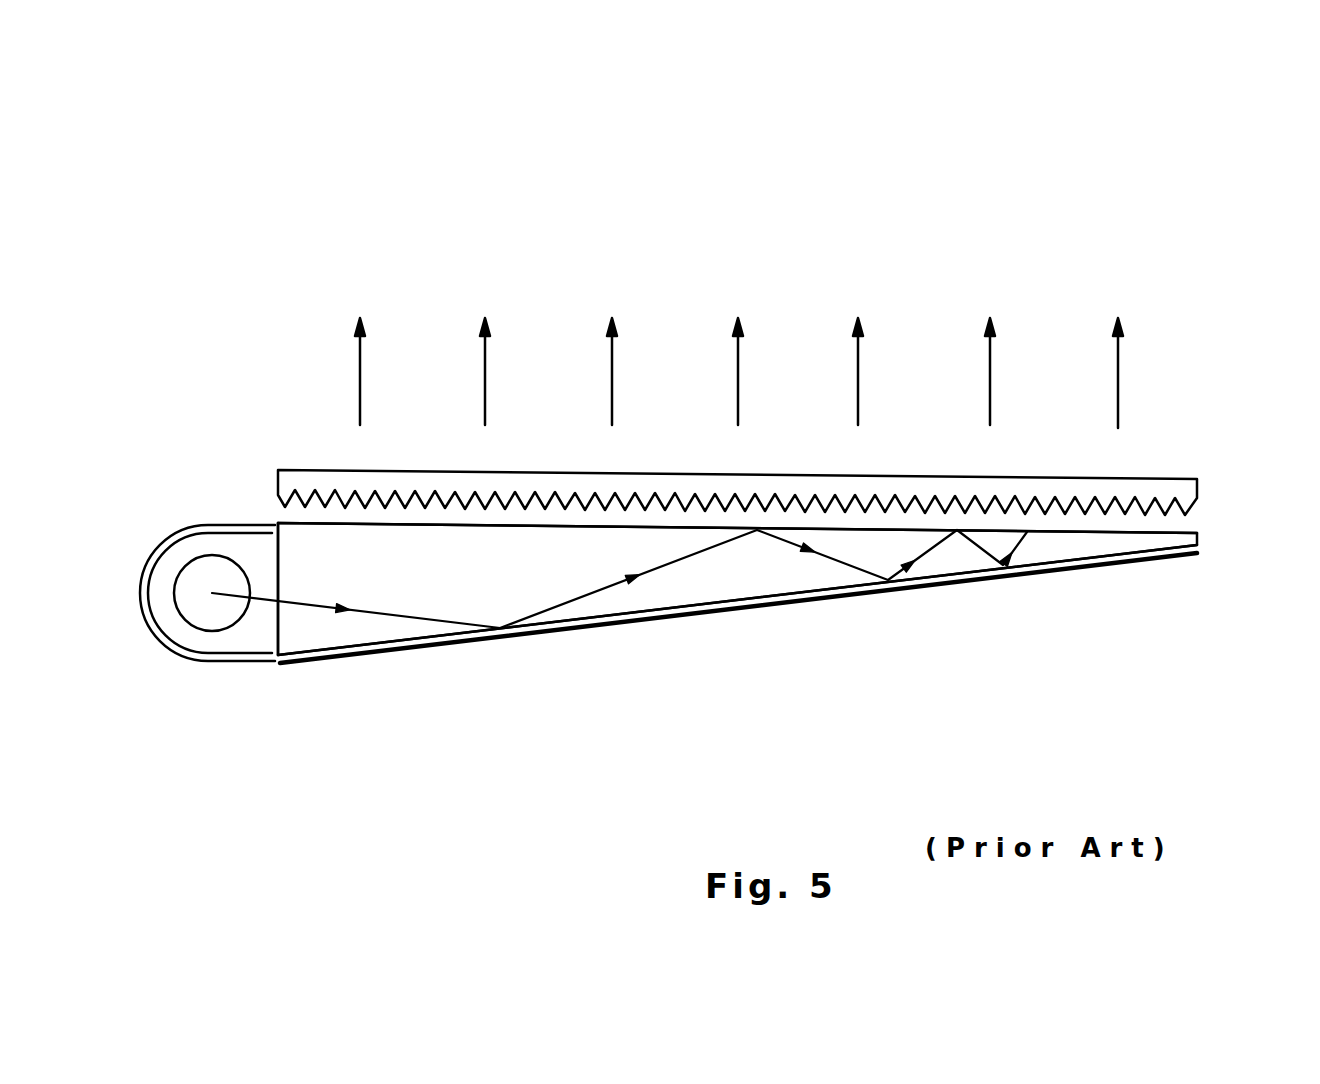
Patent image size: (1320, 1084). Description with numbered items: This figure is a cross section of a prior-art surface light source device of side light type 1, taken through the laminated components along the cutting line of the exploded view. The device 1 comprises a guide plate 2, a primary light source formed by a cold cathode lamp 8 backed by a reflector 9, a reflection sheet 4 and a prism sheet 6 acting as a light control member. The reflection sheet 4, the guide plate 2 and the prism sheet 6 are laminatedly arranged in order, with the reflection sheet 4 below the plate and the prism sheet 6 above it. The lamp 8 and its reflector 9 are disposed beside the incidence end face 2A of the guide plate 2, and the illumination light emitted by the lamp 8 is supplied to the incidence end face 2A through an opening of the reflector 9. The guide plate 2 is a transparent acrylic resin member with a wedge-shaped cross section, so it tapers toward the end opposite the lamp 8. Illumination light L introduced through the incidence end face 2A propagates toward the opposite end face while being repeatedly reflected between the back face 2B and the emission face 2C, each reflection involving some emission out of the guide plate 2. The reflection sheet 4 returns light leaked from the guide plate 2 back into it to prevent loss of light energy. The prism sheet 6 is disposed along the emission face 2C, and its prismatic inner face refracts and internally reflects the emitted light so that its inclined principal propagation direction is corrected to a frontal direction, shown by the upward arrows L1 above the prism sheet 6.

The surface light source device of side light type 1 is at (960, 227).
The guide plate 2 is at (737, 630).
The incidence end face 2A is at (282, 590).
The back face 2B is at (600, 620).
The emission face 2C is at (515, 528).
The reflection sheet 4 is at (858, 590).
The prism sheet 6 is at (1185, 488).
The cold cathode lamp 8 is at (228, 620).
The reflector 9 is at (157, 638).
The illumination light L is at (418, 618).
The emitted light L1 is at (1118, 397).